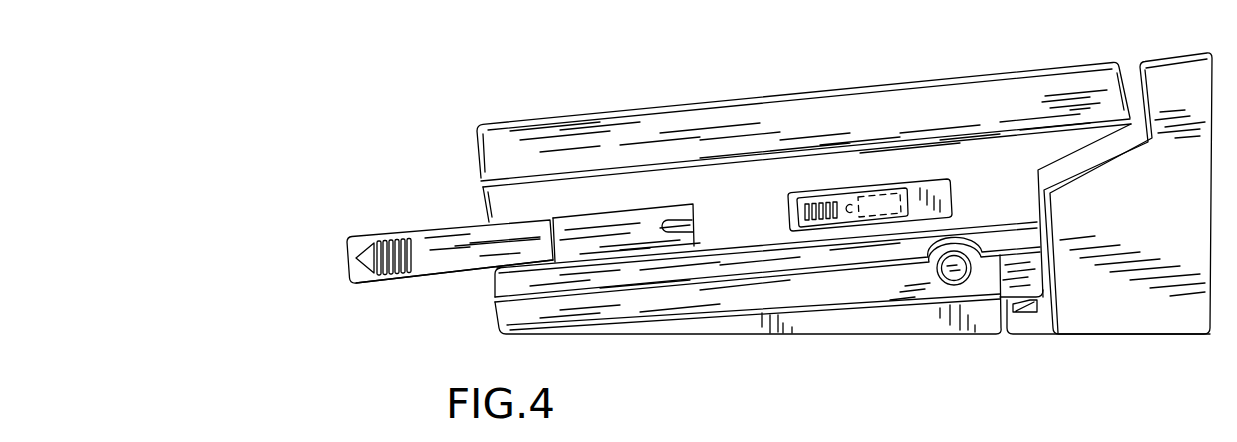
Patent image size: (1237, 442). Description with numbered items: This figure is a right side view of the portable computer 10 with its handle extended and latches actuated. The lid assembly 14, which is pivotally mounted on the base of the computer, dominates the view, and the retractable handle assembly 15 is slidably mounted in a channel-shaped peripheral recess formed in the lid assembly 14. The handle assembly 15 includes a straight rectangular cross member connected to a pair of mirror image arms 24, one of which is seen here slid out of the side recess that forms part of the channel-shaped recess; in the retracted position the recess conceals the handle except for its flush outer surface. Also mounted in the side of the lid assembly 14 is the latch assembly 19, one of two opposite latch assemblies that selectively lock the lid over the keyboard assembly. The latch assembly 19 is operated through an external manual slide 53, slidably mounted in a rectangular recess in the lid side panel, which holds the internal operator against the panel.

The portable computer 10 is at (522, 121).
The lid assembly 14 is at (582, 113).
The retractable handle assembly 15 is at (392, 229).
The latch assembly 19 is at (832, 186).
The arm 24 is at (454, 275).
The external manual slide 53 is at (886, 206).